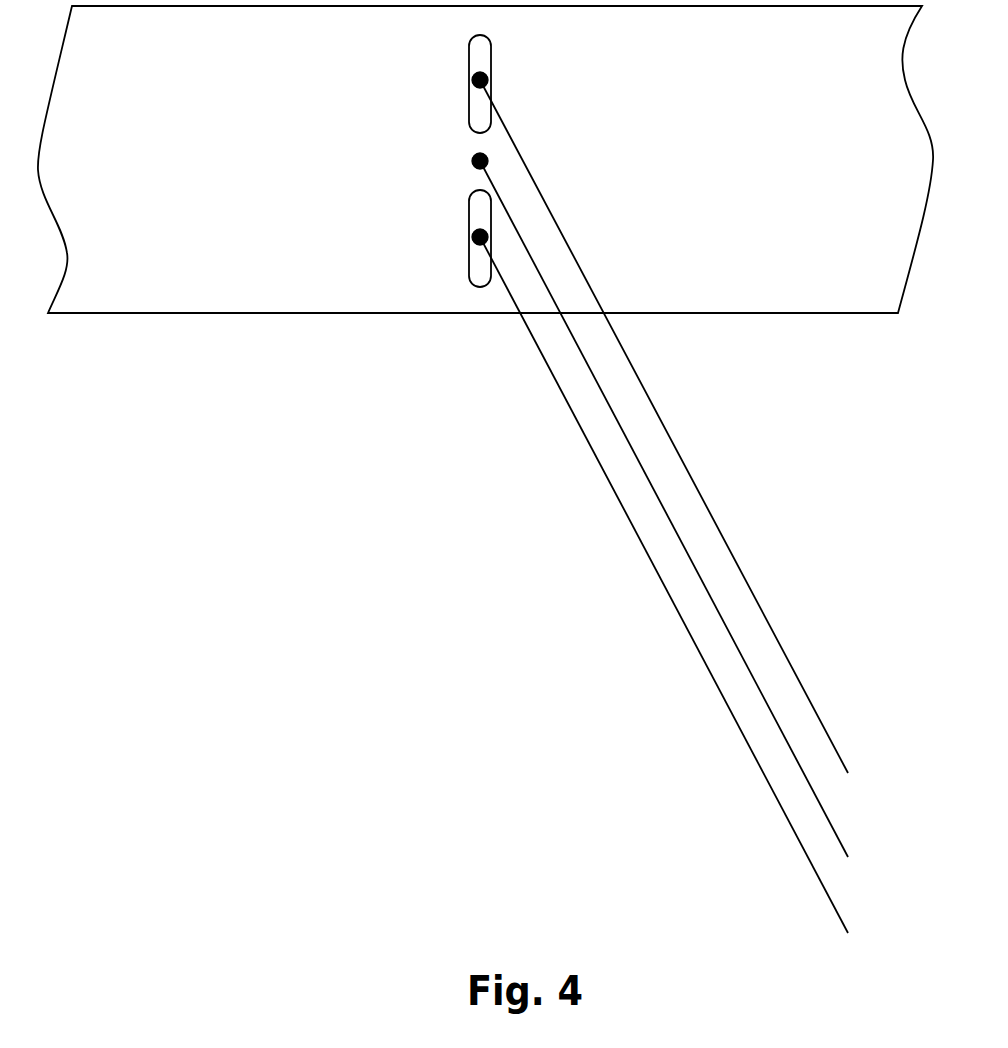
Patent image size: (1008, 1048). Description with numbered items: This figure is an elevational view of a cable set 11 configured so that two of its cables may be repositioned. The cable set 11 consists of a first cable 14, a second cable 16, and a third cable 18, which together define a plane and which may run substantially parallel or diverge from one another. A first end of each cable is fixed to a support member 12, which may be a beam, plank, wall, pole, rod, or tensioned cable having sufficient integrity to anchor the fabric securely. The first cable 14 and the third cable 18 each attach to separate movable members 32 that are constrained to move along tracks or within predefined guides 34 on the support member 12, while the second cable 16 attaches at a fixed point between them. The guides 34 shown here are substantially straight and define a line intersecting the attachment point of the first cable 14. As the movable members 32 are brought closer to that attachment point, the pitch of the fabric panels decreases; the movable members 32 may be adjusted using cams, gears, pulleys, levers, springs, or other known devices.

The cable set 11 is at (663, 612).
The support member 12 is at (240, 182).
The first cable 14 is at (648, 393).
The second cable 16 is at (670, 523).
The third cable 18 is at (582, 435).
The movable member 32 is at (476, 92).
The guide 34 is at (492, 55).